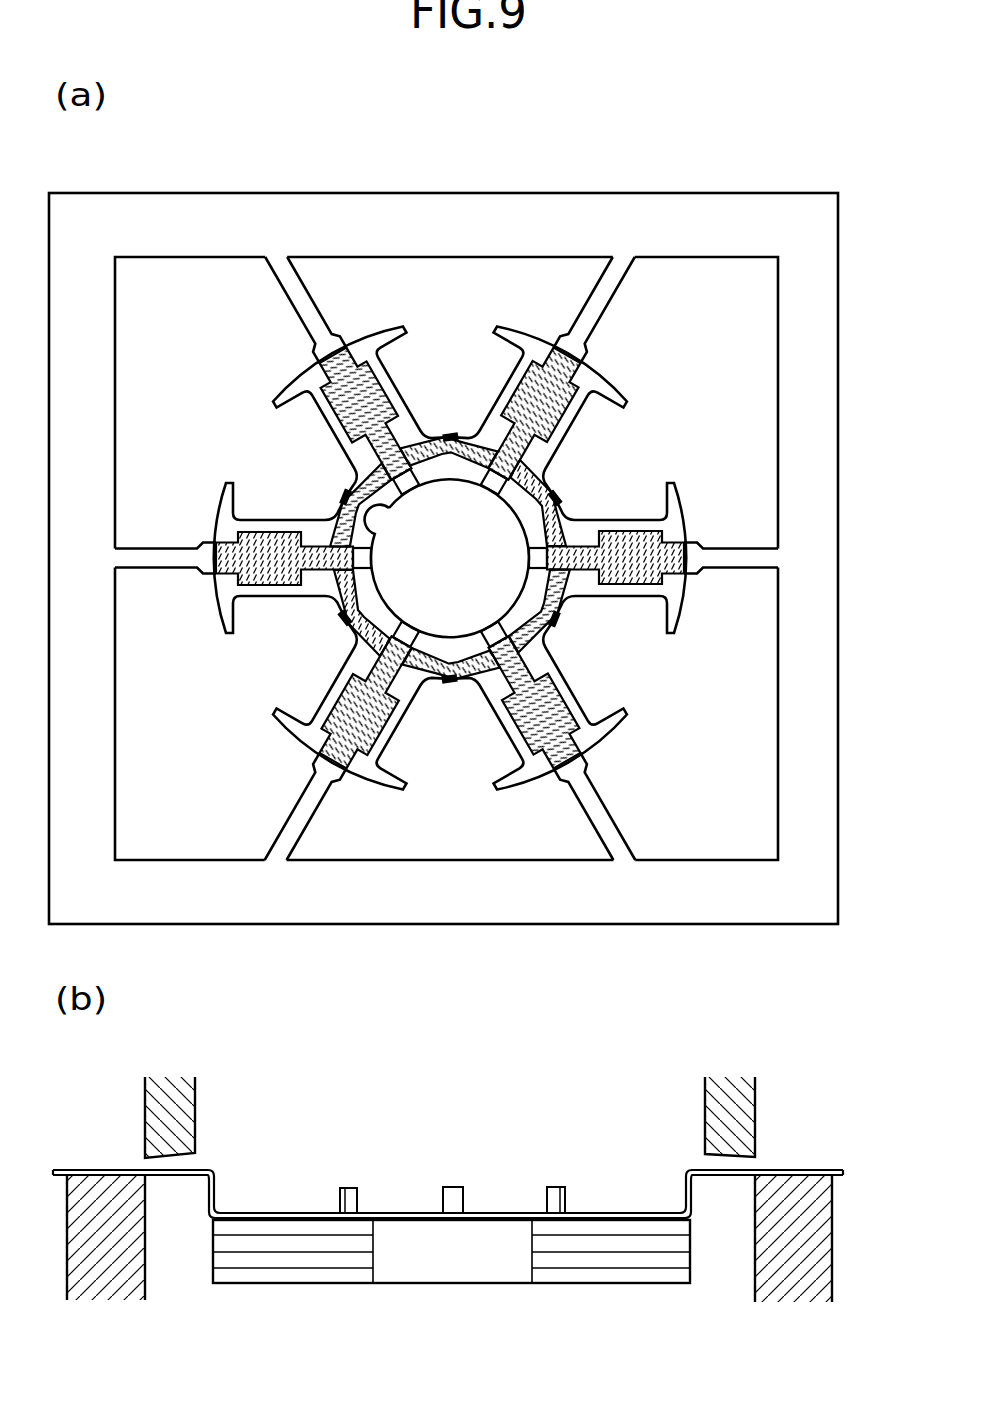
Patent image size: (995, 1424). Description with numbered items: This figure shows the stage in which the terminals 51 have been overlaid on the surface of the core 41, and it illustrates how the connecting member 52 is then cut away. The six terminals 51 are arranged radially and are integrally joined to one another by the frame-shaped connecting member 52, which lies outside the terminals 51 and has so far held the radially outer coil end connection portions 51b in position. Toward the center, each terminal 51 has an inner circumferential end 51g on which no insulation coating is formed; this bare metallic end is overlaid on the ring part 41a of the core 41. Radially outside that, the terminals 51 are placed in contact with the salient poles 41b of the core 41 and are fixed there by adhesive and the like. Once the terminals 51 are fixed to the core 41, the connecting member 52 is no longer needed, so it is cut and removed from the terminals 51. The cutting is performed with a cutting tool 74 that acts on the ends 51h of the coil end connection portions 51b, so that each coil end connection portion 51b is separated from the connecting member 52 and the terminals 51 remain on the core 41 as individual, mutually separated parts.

The connecting member 52 is at (555, 200).
The terminal 51 is at (393, 383).
The end of coil end connection portion 51h is at (138, 538).
The coil end connection portion 51b is at (175, 548).
The inner circumferential end 51g is at (497, 640).
The core 41 is at (573, 692).
The ring part 41a is at (373, 633).
The salient pole 41b is at (227, 600).
The cutting tool 74 is at (187, 1112).